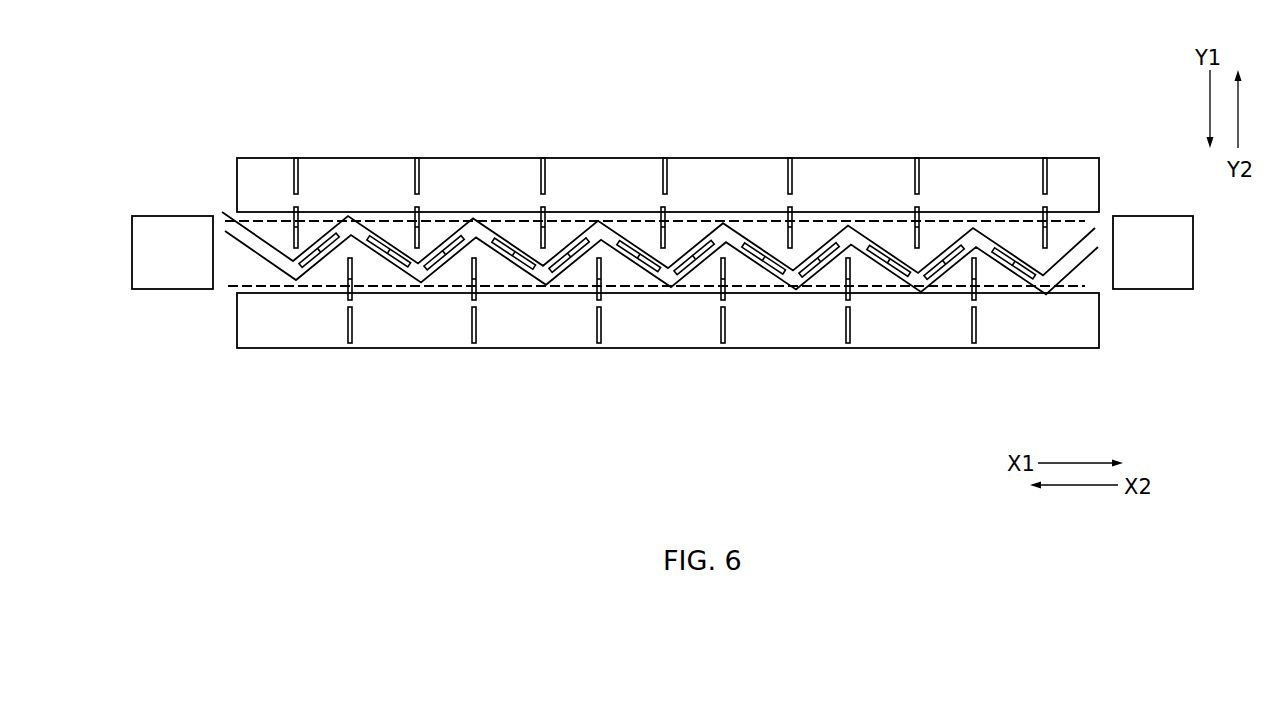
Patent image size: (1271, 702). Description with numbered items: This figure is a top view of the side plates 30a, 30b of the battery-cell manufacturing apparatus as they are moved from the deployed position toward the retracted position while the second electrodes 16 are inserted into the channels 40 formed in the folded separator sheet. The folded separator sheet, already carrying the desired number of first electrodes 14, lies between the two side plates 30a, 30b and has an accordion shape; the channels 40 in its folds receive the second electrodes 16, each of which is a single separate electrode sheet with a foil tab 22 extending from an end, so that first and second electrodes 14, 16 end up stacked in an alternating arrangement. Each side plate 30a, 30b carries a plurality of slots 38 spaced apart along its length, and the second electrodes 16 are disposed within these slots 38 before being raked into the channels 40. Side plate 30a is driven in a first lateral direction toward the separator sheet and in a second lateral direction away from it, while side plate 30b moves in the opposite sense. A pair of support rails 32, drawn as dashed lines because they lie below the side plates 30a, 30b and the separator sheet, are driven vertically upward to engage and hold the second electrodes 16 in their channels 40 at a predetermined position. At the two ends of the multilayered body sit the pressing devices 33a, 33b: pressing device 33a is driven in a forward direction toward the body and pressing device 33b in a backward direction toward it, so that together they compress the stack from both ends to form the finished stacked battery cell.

The first electrode 14 is at (636, 273).
The second electrode 16 is at (663, 203).
The foil tab 22 is at (915, 233).
The side plate 30a is at (487, 150).
The side plate 30b is at (511, 355).
The support rail 32 is at (1070, 212).
The pressing device 33a is at (184, 203).
The pressing device 33b is at (1154, 308).
The slot 38 is at (296, 151).
The channel 40 is at (383, 222).